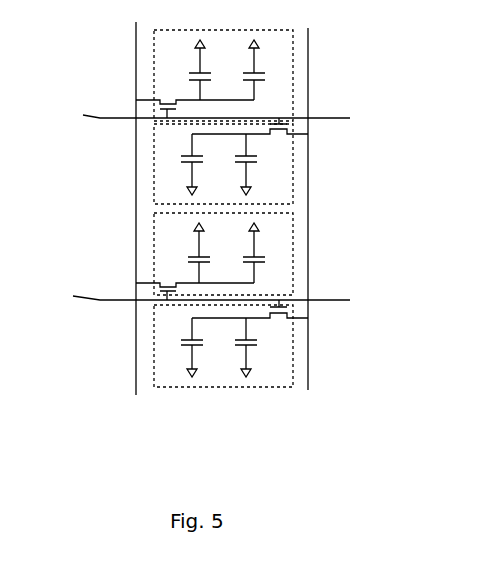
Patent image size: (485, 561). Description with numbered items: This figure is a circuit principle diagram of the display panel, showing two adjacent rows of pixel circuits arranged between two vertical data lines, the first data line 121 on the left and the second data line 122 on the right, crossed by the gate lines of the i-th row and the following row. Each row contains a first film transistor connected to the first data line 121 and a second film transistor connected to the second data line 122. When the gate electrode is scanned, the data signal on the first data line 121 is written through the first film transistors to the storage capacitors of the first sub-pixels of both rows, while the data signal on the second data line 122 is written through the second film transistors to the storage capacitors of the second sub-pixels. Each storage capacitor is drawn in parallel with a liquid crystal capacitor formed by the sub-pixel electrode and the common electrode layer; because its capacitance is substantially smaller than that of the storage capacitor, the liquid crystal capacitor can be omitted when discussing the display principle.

The first data line 121 is at (136, 24).
The second data line 122 is at (308, 28).